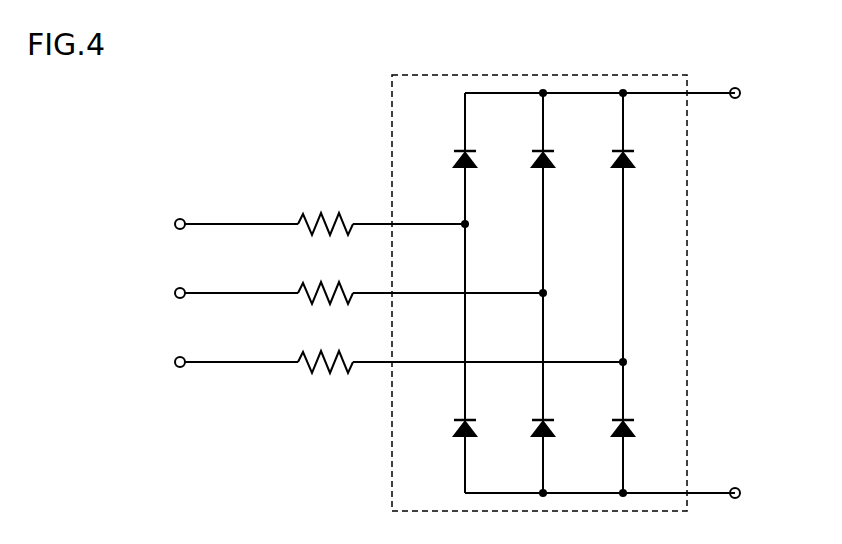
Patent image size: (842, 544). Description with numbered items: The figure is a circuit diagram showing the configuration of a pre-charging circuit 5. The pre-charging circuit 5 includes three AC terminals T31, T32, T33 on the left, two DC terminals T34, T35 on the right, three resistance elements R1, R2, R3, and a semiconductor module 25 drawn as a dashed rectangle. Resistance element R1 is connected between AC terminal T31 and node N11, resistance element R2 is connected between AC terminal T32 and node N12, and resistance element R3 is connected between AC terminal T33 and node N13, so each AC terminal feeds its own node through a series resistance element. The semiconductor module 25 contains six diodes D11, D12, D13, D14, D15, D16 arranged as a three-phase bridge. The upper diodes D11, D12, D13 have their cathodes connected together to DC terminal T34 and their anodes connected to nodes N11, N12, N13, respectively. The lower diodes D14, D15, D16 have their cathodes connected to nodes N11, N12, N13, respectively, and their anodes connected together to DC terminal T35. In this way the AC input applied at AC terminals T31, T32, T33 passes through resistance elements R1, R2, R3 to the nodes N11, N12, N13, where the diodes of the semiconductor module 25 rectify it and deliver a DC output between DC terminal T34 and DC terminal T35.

The pre-charging circuit 5 is at (188, 110).
The semiconductor module 25 is at (461, 74).
The AC terminal T31 is at (177, 219).
The AC terminal T32 is at (177, 288).
The AC terminal T33 is at (177, 357).
The DC terminal T34 is at (739, 88).
The DC terminal T35 is at (739, 488).
The resistance element R1 is at (320, 214).
The resistance element R2 is at (320, 283).
The resistance element R3 is at (320, 352).
The node N11 is at (462, 228).
The node N12 is at (540, 297).
The node N13 is at (627, 359).
The diode D11 is at (460, 149).
The diode D12 is at (539, 149).
The diode D13 is at (618, 149).
The diode D14 is at (460, 418).
The diode D15 is at (539, 418).
The diode D16 is at (619, 418).